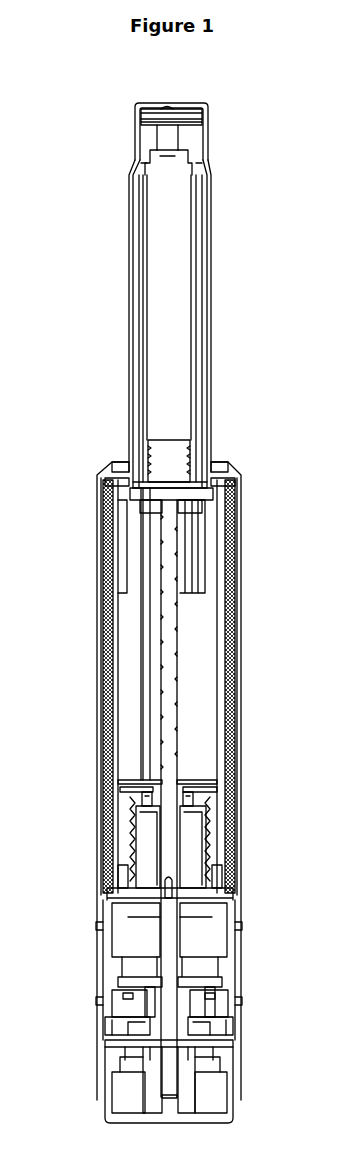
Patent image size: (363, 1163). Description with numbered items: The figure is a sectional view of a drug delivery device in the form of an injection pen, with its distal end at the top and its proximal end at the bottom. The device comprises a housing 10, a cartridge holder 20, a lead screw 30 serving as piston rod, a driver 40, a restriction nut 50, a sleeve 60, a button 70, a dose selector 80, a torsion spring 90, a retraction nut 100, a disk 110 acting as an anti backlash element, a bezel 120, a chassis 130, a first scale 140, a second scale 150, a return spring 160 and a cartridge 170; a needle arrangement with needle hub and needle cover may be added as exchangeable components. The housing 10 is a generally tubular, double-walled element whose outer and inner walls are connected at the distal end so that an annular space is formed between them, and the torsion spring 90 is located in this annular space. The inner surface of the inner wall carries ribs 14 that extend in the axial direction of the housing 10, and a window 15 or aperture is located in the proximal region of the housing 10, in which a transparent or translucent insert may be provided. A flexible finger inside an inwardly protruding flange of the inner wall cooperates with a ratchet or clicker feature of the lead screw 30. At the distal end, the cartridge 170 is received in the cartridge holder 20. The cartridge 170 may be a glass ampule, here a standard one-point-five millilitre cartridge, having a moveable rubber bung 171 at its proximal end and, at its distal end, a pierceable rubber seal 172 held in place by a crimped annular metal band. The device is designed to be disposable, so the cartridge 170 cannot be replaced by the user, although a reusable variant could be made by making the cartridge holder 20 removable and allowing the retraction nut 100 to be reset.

The housing 10 is at (240, 628).
The ribs 14 is at (140, 557).
The window 15 is at (240, 957).
The cartridge holder 20 is at (210, 213).
The lead screw 30 is at (170, 640).
The driver 40 is at (170, 843).
The restriction nut 50 is at (218, 865).
The sleeve 60 is at (212, 820).
The button 70 is at (230, 1123).
The dose selector 80 is at (125, 1072).
The torsion spring 90 is at (230, 558).
The retraction nut 100 is at (210, 497).
The disk 110 is at (128, 490).
The bezel 120 is at (113, 460).
The chassis 130 is at (140, 1035).
The first scale 140 is at (237, 1002).
The second scale 150 is at (237, 928).
The return spring 160 is at (143, 800).
The cartridge 170 is at (148, 193).
The rubber bung 171 is at (178, 447).
The rubber seal 172 is at (175, 108).